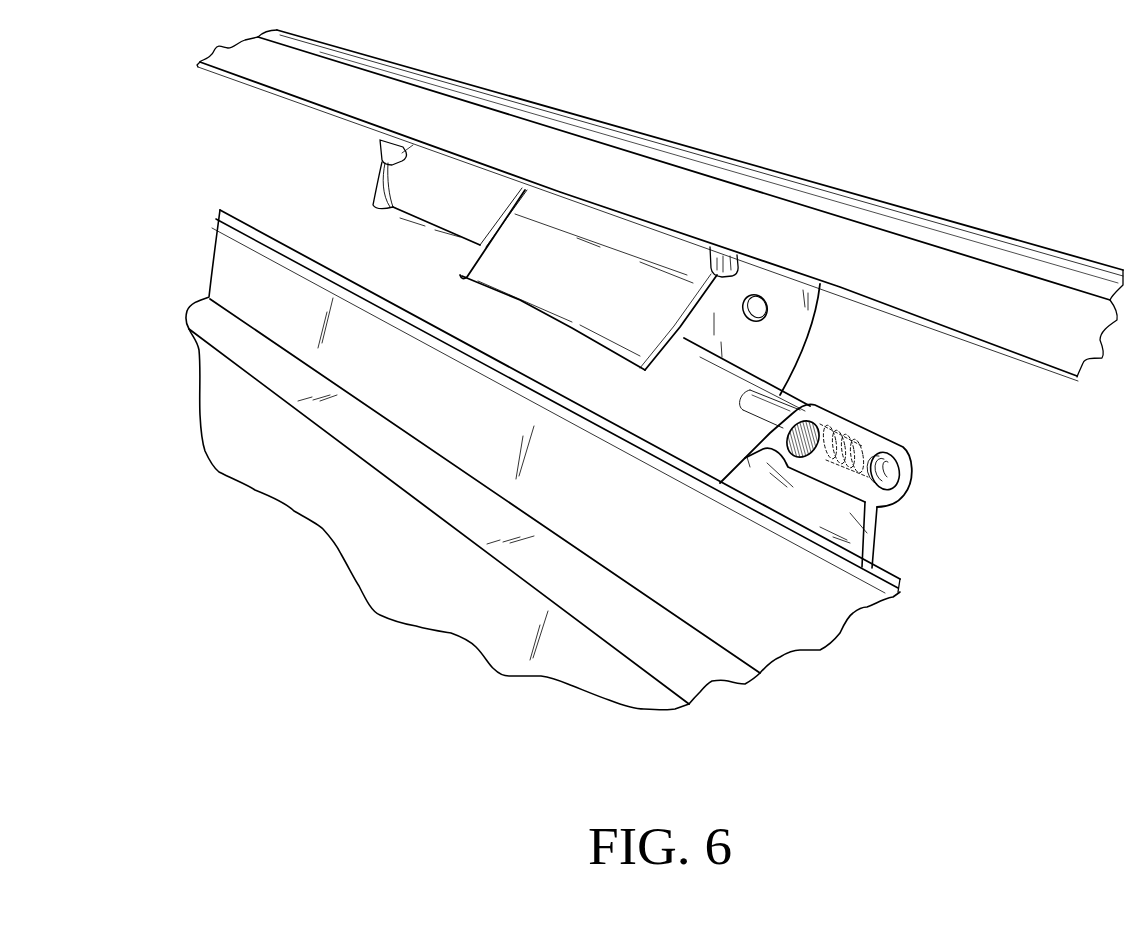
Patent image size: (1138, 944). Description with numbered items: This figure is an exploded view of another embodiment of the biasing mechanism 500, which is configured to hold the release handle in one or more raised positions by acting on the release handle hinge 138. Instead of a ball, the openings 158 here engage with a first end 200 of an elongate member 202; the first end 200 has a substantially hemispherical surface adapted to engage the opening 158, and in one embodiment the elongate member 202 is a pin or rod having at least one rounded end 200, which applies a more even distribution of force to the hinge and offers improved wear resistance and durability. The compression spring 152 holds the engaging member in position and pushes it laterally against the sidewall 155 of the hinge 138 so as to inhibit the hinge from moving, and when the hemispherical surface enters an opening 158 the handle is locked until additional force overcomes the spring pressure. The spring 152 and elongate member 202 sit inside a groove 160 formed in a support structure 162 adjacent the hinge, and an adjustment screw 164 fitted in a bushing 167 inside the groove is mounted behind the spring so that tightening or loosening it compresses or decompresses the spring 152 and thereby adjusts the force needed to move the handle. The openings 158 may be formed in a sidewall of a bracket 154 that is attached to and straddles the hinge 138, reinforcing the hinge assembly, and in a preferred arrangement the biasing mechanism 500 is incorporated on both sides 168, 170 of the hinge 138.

The hinge 138 is at (600, 273).
The compression spring 152 is at (807, 422).
The bracket 154 is at (688, 341).
The sidewall 155 is at (728, 262).
The opening 158 is at (757, 295).
The groove 160 is at (893, 437).
The support structure 162 is at (878, 542).
The adjustment screw 164 is at (813, 477).
The bushing 167 is at (770, 462).
The side of the hinge 168 is at (707, 337).
The side of the hinge 170 is at (486, 219).
The first end 200 is at (742, 390).
The elongate member 202 is at (772, 417).
The biasing mechanism 500 is at (868, 409).